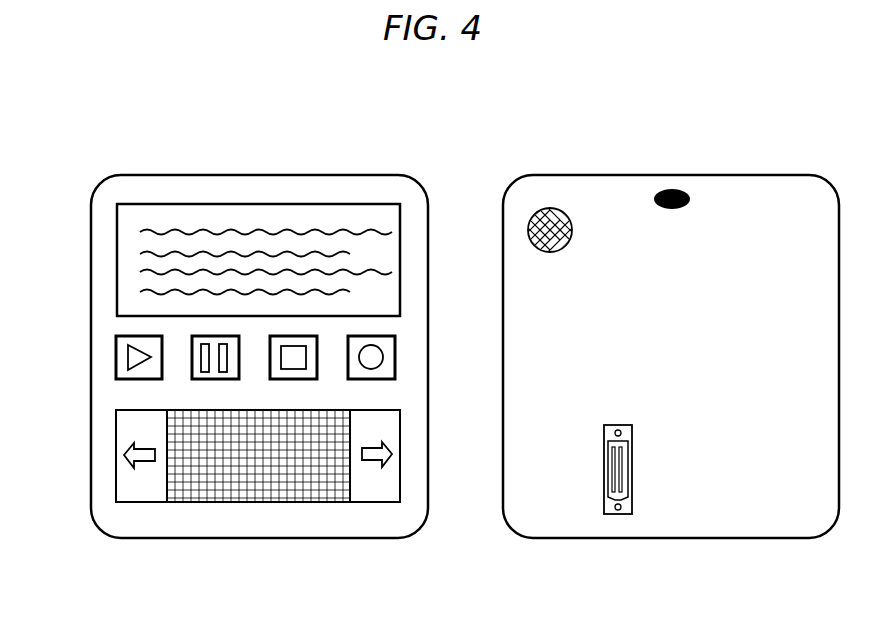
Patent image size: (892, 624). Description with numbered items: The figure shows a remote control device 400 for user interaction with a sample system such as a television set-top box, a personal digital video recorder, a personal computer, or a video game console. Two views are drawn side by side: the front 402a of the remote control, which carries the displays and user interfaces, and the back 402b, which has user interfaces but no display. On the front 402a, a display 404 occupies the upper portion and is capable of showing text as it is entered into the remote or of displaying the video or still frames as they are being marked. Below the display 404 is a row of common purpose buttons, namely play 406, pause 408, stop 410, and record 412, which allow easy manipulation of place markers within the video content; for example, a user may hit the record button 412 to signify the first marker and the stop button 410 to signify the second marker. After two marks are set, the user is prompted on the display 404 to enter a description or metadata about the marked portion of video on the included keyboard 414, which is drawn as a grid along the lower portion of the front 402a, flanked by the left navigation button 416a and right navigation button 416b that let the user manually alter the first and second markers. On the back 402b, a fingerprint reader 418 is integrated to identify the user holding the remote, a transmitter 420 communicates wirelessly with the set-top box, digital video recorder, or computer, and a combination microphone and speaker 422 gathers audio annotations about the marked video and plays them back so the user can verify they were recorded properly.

The remote control device 400 is at (494, 146).
The front 402a is at (150, 540).
The back 402b is at (635, 538).
The display 404 is at (118, 245).
The play button 406 is at (116, 353).
The pause button 408 is at (215, 380).
The stop button 410 is at (312, 380).
The record button 412 is at (398, 355).
The keyboard 414 is at (265, 495).
The left navigation button 416a is at (133, 490).
The right navigation button 416b is at (375, 495).
The fingerprint reader 418 is at (632, 470).
The transmitter 420 is at (673, 190).
The combination microphone and speaker 422 is at (552, 208).